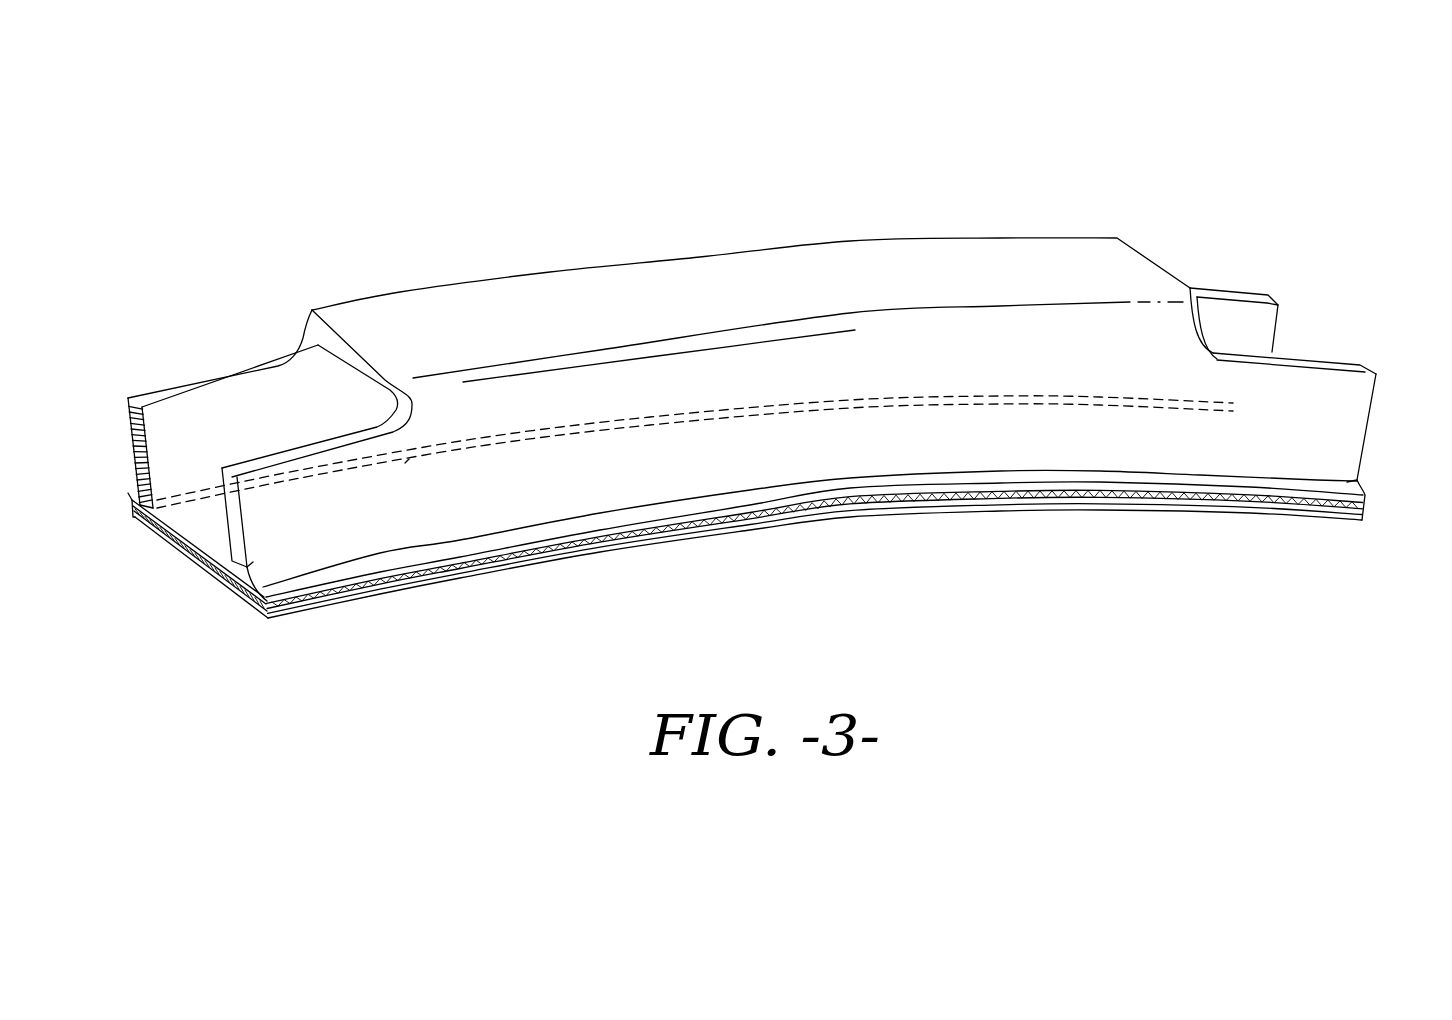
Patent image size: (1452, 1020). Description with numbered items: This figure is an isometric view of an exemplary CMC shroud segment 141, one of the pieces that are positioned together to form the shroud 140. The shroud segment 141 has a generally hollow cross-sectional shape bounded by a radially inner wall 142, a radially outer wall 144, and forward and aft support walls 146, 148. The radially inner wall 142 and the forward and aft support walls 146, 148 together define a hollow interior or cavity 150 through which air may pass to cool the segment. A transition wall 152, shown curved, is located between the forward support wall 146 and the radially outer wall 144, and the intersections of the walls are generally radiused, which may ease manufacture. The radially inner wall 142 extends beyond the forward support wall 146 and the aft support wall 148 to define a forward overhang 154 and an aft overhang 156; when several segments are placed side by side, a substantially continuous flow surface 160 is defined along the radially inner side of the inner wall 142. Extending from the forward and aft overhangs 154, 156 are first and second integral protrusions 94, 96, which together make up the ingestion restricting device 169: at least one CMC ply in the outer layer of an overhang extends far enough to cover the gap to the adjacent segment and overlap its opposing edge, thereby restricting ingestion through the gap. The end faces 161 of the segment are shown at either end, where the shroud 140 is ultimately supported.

The shroud segment 141 is at (458, 192).
The radially outer wall 144 is at (743, 270).
The transition wall 152 is at (308, 310).
The cavity 150 is at (322, 403).
The aft support wall 148 is at (1208, 276).
The forward support wall 146 is at (1329, 348).
The end walls 161 is at (126, 453).
The shroud 140 is at (919, 520).
The radially inner wall 142 is at (245, 580).
The first integral protrusion 94 is at (647, 533).
The forward overhang 154 is at (525, 557).
The second integral protrusion 96 is at (797, 413).
The ingestion restricting device 169 is at (404, 466).
The aft overhang 156 is at (132, 502).
The flow surface 160 is at (190, 563).